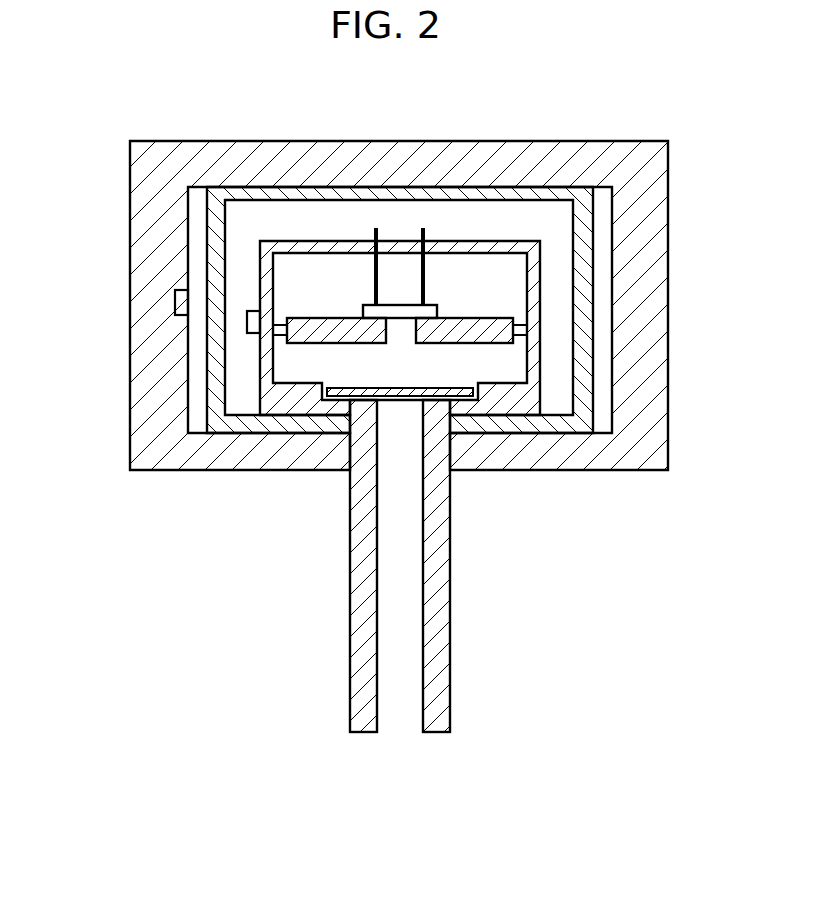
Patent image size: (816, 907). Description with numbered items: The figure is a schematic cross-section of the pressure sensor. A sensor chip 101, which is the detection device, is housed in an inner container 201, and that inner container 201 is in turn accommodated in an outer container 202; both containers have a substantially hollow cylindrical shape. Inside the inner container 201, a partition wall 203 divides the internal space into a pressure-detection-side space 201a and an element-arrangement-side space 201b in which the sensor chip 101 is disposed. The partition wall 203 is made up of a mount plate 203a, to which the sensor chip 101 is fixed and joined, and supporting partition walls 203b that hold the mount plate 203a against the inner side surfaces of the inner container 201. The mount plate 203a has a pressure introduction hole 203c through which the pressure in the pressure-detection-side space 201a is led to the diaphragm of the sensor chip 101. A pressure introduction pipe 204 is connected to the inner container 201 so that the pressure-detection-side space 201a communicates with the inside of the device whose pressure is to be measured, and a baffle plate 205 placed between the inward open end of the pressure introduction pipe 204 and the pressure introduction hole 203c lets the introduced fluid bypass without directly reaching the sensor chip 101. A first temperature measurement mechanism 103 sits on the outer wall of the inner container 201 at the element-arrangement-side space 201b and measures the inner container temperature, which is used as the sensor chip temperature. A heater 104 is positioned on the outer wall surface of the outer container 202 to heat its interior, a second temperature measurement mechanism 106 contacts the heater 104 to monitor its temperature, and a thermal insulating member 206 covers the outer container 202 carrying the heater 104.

The sensor chip 101 is at (398, 304).
The first temperature measurement mechanism 103 is at (250, 323).
The heater 104 is at (195, 243).
The second temperature measurement mechanism 106 is at (175, 304).
The inner container 201 is at (392, 327).
The pressure-detection-side space 201a is at (290, 378).
The element-arrangement-side space 201b is at (293, 267).
The outer container 202 is at (583, 255).
The partition wall 203 is at (509, 324).
The mount plate 203a is at (488, 344).
The supporting partition walls 203b is at (519, 336).
The pressure introduction hole 203c is at (388, 333).
The pressure introduction pipe 204 is at (445, 548).
The baffle plate 205 is at (434, 388).
The thermal insulating member 206 is at (660, 447).